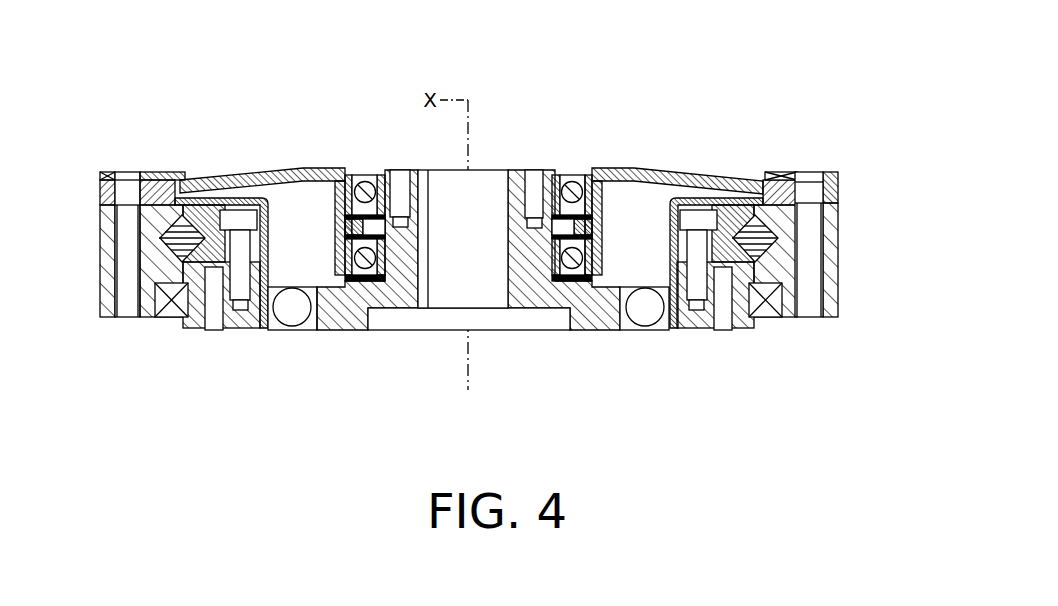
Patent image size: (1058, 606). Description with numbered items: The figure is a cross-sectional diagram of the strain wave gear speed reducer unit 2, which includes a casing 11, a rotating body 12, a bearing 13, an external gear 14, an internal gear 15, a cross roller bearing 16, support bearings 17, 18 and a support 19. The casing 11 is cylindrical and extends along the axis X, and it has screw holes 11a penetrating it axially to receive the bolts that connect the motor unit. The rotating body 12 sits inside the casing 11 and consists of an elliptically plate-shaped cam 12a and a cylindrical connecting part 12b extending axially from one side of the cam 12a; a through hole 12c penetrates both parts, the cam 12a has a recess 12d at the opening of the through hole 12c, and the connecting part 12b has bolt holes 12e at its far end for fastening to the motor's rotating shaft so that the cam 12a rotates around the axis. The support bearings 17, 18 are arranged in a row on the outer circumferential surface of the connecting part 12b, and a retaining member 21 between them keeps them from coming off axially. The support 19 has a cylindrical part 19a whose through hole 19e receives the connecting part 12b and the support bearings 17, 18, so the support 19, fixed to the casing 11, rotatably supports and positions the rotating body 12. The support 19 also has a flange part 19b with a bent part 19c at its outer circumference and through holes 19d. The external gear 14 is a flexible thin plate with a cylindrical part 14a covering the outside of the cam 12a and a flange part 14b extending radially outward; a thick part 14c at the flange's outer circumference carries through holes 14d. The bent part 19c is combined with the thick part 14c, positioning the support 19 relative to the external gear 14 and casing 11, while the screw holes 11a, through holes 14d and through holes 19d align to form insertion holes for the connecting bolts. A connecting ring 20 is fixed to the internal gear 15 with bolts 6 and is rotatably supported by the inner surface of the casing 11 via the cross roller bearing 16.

The strain wave gear speed reducer unit 2 is at (830, 112).
The bolts 6 is at (286, 326).
The casing 11 is at (847, 276).
The screw holes 11a is at (822, 277).
The rotating body 12 is at (467, 227).
The cam 12a is at (335, 330).
The connecting part 12b is at (521, 170).
The through hole 12c is at (505, 183).
The recess 12d is at (553, 324).
The bolt holes 12e is at (398, 170).
The bearing 13 is at (645, 308).
The external gear 14 is at (773, 295).
The cylindrical part 14a is at (705, 331).
The flange part 14b is at (748, 318).
The thick part 14c is at (147, 172).
The through holes 14d is at (820, 191).
The internal gear 15 is at (235, 330).
The cross roller bearing 16 is at (162, 318).
The support bearing 17 is at (590, 172).
The support bearing 18 is at (612, 258).
The support 19 is at (473, 197).
The cylindrical part 19a is at (327, 207).
The flange part 19b is at (235, 170).
The bent part 19c is at (182, 172).
The through holes 19d is at (807, 170).
The through hole 19e is at (375, 282).
The connecting ring 20 is at (193, 330).
The retaining member 21 is at (353, 172).